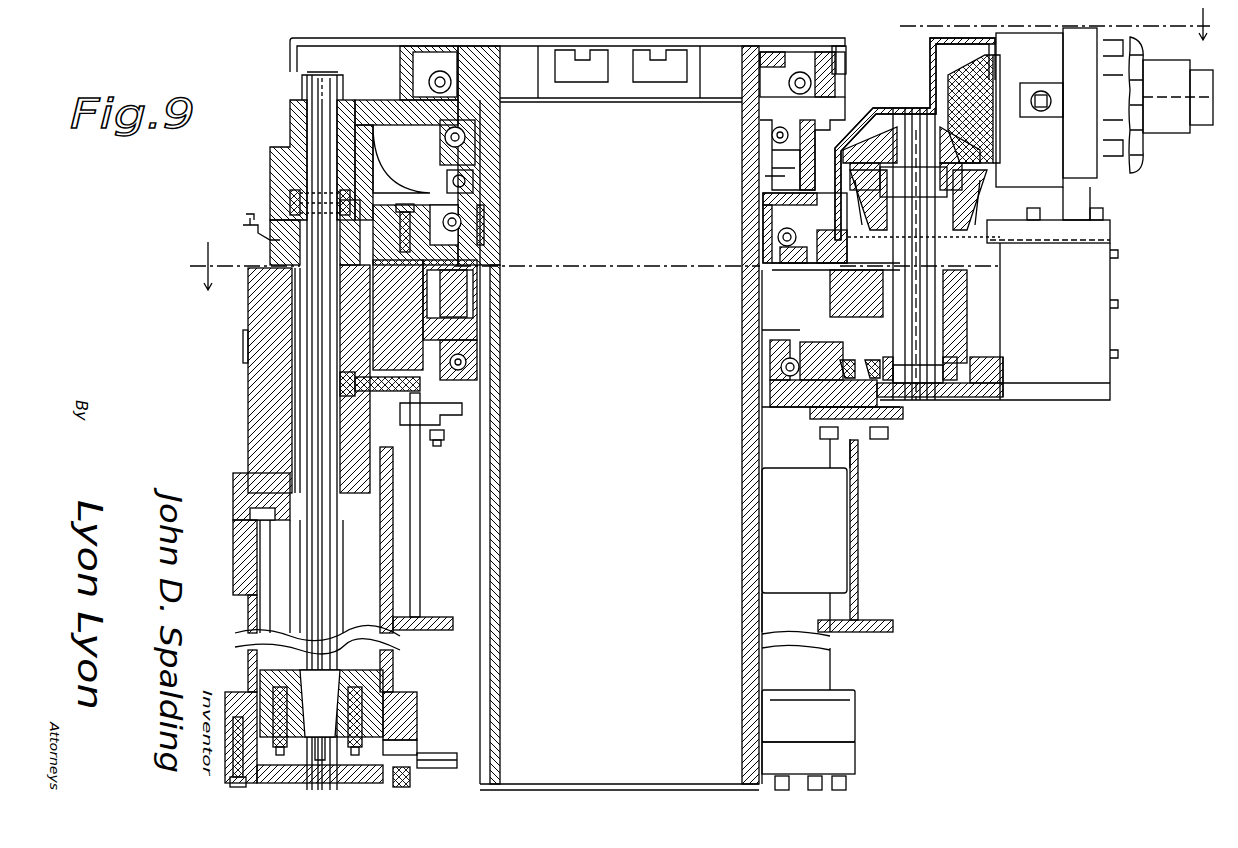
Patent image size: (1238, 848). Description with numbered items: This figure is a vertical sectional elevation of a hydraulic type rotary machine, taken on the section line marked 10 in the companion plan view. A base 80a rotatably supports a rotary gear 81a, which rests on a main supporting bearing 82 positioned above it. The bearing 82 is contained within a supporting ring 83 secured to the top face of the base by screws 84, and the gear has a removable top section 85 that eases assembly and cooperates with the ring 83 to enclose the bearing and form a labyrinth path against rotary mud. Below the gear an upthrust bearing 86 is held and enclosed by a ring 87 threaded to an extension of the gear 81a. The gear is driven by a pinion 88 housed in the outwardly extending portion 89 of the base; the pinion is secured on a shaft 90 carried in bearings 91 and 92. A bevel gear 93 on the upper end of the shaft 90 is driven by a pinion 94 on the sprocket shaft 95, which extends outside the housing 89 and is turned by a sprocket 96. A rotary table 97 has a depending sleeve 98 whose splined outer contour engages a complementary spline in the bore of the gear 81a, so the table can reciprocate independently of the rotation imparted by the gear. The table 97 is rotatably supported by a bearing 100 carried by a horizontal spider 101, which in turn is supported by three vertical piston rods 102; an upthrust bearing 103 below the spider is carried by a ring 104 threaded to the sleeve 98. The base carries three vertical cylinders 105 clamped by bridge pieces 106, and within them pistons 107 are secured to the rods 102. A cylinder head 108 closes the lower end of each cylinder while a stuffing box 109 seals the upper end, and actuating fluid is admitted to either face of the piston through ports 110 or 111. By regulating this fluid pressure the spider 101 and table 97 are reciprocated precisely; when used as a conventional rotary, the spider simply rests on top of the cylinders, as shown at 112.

The Figure 10 section line 10 is at (709, 148).
The base 80a is at (262, 316).
The rotary gear 81a is at (465, 302).
The main supporting bearing 82 is at (762, 237).
The supporting ring 83 is at (790, 266).
The screws 84 is at (404, 214).
The removable top section 85 is at (486, 216).
The upthrust bearing 86 is at (780, 368).
The ring 87 is at (772, 395).
The pinion 88 is at (872, 300).
The outwardly extending portion 89 is at (985, 400).
The pinion shaft 90 is at (920, 398).
The bearing 91 is at (880, 362).
The bearing 92 is at (950, 212).
The bevel gear 93 is at (868, 130).
The pinion 94 is at (963, 76).
The sprocket shaft 95 is at (1020, 92).
The sprocket 96 is at (1145, 52).
The rotary table 97 is at (752, 50).
The depending sleeve 98 is at (750, 542).
The bearing 100 is at (846, 54).
The horizontal spider 101 is at (842, 97).
The vertical piston rods 102 is at (318, 118).
The upthrust bearing 103 is at (772, 136).
The ring 104 is at (770, 170).
The vertical cylinders 105 is at (250, 622).
The bridge pieces 106 is at (245, 478).
The pistons 107 is at (255, 680).
The cylinder head 108 is at (420, 738).
The stuffing box 109 is at (290, 204).
The port 110 is at (420, 768).
The port 111 is at (400, 474).
The spider rest position 112 is at (262, 217).